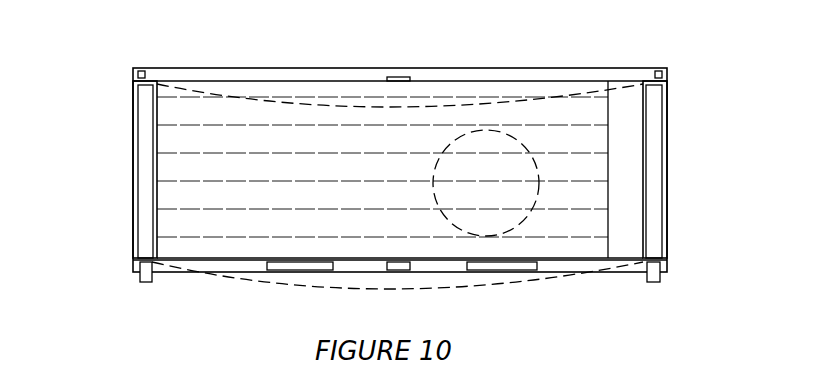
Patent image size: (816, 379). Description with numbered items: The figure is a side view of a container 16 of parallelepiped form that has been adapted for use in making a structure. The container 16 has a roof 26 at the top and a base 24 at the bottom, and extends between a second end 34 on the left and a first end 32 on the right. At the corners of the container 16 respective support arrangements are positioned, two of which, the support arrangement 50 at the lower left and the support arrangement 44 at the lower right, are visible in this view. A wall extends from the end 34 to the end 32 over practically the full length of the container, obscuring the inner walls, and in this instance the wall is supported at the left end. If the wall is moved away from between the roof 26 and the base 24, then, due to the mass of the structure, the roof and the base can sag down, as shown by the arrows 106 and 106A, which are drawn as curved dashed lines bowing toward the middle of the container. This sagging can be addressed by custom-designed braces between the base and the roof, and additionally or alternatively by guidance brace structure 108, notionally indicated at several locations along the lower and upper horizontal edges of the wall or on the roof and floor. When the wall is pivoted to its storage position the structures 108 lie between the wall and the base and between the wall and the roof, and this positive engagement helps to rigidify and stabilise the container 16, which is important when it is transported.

The container 16 is at (178, 62).
The roof 26 is at (265, 68).
The base 24 is at (605, 273).
The second end 34 is at (128, 107).
The first end 32 is at (672, 106).
The guidance brace structure 108 is at (403, 77).
The arrow 106 is at (380, 106).
The arrow 106A is at (380, 266).
The support arrangement 50 is at (130, 283).
The support arrangement 44 is at (668, 285).